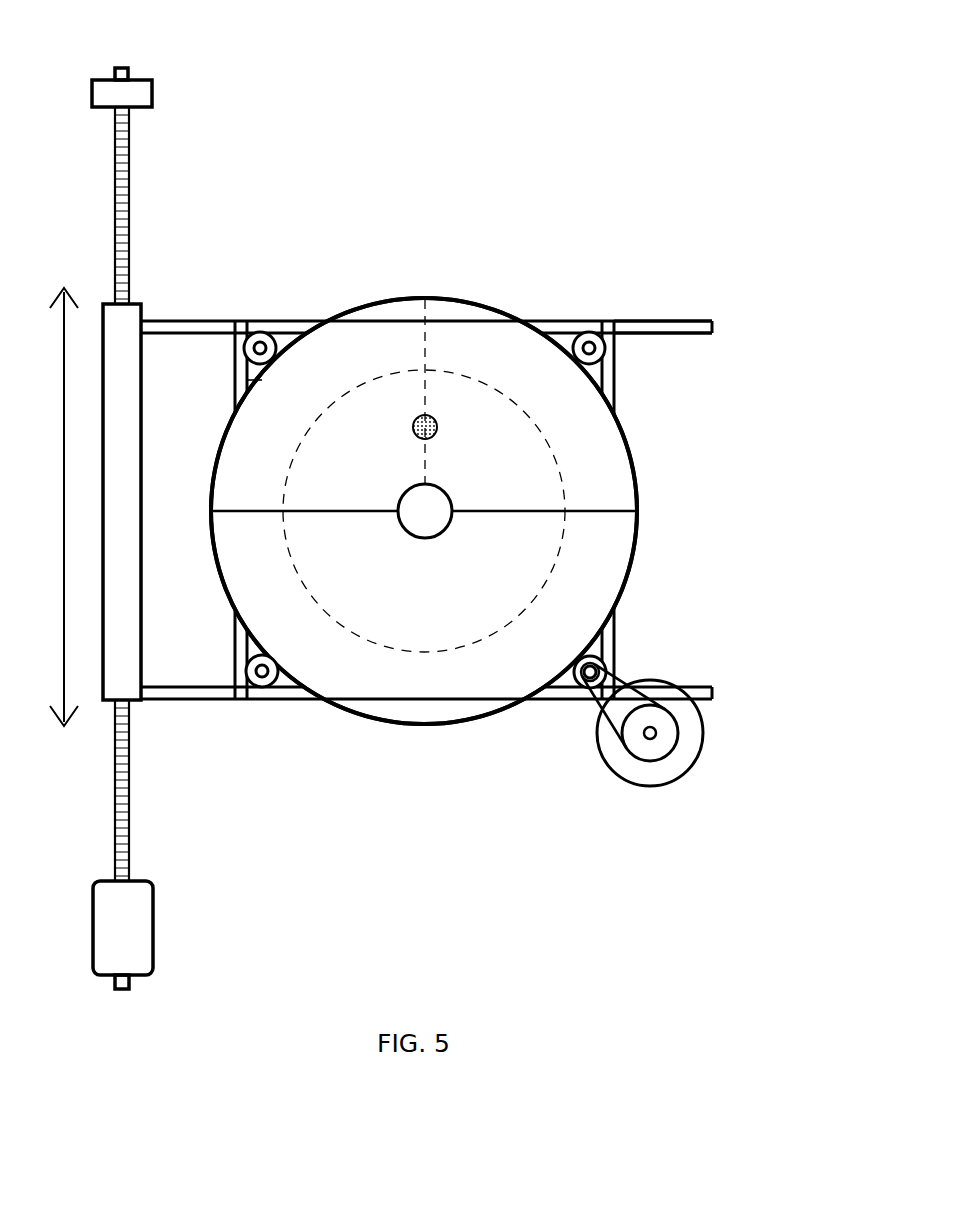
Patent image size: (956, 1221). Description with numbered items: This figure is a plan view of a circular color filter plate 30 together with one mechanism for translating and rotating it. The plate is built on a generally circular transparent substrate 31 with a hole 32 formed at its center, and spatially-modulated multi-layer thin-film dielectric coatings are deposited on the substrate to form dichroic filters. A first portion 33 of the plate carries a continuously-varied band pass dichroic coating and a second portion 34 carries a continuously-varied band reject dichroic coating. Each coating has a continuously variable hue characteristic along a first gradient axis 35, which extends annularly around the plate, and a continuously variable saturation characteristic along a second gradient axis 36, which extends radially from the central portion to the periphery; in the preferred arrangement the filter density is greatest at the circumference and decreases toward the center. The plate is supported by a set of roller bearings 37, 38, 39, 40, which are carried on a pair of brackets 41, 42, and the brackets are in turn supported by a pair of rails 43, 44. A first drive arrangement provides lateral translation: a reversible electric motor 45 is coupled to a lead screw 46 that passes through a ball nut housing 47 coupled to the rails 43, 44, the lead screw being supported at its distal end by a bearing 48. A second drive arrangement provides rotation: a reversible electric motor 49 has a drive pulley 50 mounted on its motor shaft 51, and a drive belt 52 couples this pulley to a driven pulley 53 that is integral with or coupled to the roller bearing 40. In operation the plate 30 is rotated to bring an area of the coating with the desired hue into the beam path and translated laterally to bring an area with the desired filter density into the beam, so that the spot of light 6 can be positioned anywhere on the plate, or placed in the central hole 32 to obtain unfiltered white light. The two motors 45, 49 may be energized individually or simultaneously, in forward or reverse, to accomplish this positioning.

The spot of light 6 is at (434, 418).
The color filter plate 30 is at (343, 298).
The transparent substrate 31 is at (641, 512).
The hole 32 is at (452, 497).
The first portion 33 is at (391, 334).
The second portion 34 is at (427, 687).
The first gradient axis 35 is at (556, 452).
The second gradient axis 36 is at (427, 347).
The roller bearing 37 is at (273, 702).
The roller bearing 38 is at (256, 330).
The roller bearing 39 is at (595, 332).
The roller bearing 40 is at (583, 680).
The bracket 41 is at (232, 330).
The bracket 42 is at (617, 627).
The rail 43 is at (713, 700).
The rail 44 is at (713, 320).
The reversible electric motor 45 is at (92, 945).
The lead screw 46 is at (115, 822).
The ball nut housing 47 is at (103, 705).
The bearing 48 is at (102, 80).
The reversible electric motor 49 is at (688, 770).
The drive pulley 50 is at (643, 760).
The motor shaft 51 is at (655, 735).
The drive belt 52 is at (605, 722).
The driven pulley 53 is at (602, 673).